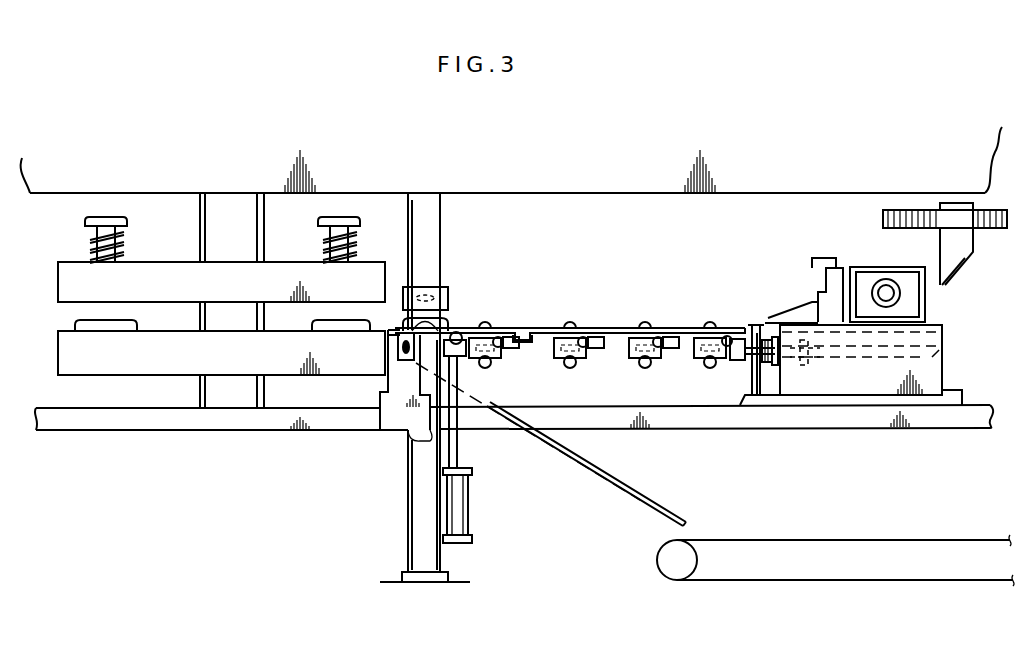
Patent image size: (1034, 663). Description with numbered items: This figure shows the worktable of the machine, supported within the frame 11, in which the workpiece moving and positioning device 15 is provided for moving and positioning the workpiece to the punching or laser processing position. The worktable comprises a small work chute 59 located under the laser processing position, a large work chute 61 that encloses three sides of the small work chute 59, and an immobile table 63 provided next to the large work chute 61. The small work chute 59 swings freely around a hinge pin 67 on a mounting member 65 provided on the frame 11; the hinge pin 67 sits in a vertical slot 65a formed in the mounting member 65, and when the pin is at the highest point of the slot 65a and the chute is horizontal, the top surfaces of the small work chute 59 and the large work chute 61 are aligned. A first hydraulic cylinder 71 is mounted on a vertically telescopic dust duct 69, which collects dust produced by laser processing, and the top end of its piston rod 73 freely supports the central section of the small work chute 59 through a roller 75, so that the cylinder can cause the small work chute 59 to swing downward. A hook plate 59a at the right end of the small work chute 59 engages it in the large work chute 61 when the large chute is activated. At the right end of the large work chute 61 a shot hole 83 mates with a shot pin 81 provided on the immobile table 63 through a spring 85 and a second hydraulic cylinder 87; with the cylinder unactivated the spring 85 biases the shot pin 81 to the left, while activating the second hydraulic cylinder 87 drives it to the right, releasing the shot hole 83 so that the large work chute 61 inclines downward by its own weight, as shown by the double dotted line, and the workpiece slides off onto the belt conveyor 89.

The frame 11 is at (582, 177).
The workpiece moving and positioning device 15 is at (883, 216).
The small work chute 59 is at (488, 321).
The hook plate 59a is at (530, 330).
The large work chute 61 is at (628, 320).
The immobile table 63 is at (753, 325).
The mounting member 65 is at (401, 382).
The vertical slot 65a is at (397, 341).
The hinge pin 67 is at (400, 357).
The vertically telescopic dust duct 69 is at (408, 518).
The first hydraulic cylinder 71 is at (462, 518).
The piston rod 73 is at (457, 443).
The roller 75 is at (456, 332).
The shot pin 81 is at (758, 352).
The shot hole 83 is at (738, 350).
The spring 85 is at (768, 366).
The second hydraulic cylinder 87 is at (795, 345).
The belt conveyor 89 is at (882, 543).